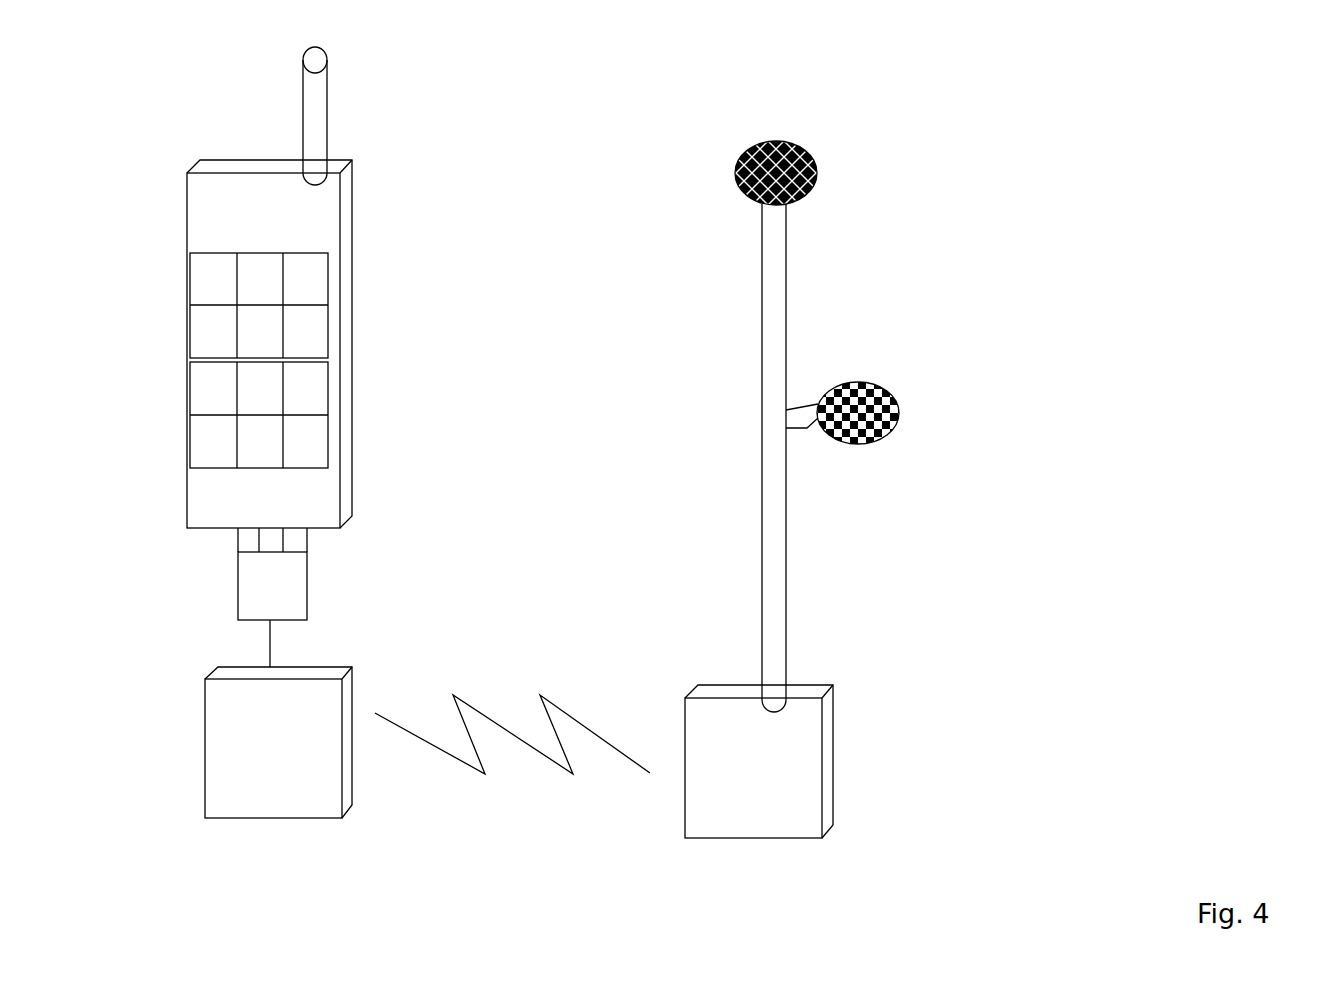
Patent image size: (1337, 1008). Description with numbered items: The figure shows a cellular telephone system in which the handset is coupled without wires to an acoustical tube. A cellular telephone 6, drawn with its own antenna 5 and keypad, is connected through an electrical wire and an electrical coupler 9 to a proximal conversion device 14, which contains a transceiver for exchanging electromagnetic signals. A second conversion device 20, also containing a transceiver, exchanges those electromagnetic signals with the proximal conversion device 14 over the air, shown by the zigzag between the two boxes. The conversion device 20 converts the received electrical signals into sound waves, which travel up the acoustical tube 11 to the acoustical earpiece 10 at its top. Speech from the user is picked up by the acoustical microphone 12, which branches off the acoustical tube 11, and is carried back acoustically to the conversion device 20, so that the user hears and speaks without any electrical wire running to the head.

The antenna 5 is at (350, 92).
The cellular telephone 6 is at (352, 357).
The electrical coupler 9 is at (308, 562).
The acoustical earpiece 10 is at (735, 143).
The acoustical tube 11 is at (738, 432).
The acoustical microphone 12 is at (900, 412).
The proximal conversion device 14 is at (390, 785).
The conversion device 20 is at (835, 757).